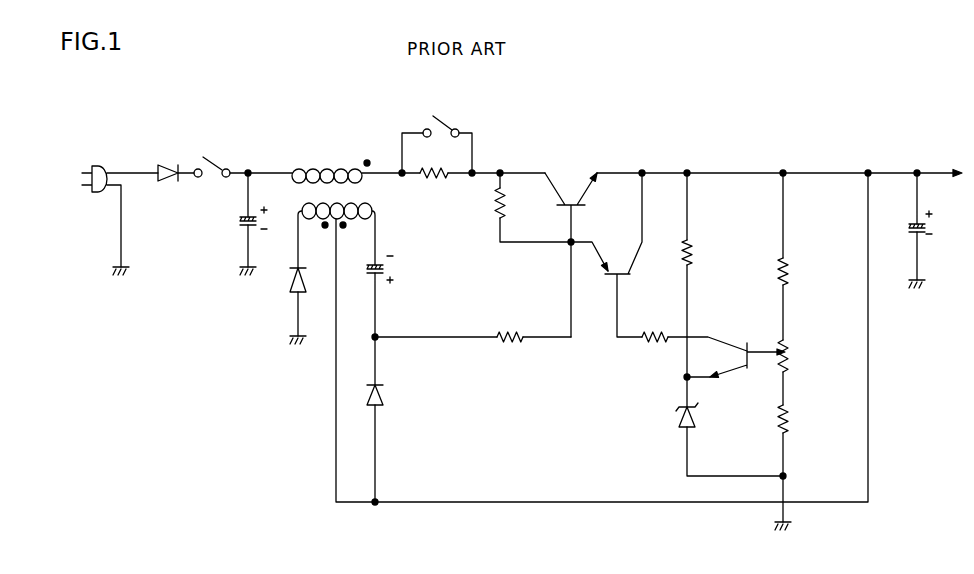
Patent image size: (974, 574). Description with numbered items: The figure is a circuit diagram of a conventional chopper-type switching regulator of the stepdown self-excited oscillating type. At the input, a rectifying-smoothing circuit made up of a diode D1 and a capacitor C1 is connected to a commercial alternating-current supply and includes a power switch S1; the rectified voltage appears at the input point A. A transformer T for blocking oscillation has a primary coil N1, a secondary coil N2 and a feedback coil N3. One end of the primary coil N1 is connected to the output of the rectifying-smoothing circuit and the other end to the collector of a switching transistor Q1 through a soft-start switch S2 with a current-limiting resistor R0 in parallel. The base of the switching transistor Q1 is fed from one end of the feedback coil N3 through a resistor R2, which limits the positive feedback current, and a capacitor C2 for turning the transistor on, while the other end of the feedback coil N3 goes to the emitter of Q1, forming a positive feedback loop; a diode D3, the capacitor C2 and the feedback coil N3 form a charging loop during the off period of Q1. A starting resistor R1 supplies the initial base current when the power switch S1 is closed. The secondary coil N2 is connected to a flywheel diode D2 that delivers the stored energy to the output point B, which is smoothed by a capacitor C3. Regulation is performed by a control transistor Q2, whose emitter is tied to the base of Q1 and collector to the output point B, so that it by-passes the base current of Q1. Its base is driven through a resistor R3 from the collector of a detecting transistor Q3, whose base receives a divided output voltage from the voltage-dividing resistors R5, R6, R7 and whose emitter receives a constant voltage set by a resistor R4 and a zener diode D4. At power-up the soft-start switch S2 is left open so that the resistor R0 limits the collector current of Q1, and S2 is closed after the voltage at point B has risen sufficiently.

The diode D1 is at (168, 186).
The power switch S1 is at (212, 156).
The input point A is at (249, 171).
The capacitor C1 is at (238, 225).
The transformer T is at (338, 206).
The primary coil N1 is at (331, 163).
The secondary coil N2 is at (314, 235).
The feedback coil N3 is at (369, 190).
The flywheel diode D2 is at (284, 306).
The capacitor C2 is at (369, 298).
The soft-start switch S2 is at (437, 138).
The current-limiting resistor R0 is at (434, 187).
The starting resistor R1 is at (532, 206).
The switching transistor Q1 is at (571, 243).
The control transistor Q2 is at (608, 253).
The resistor R2 is at (474, 323).
The resistor R3 is at (694, 329).
The resistor R4 is at (699, 273).
The detecting transistor Q3 is at (734, 361).
The zener diode D4 is at (718, 426).
The output point B is at (785, 171).
The voltage-dividing resistor R5 is at (796, 258).
The voltage-dividing resistor R6 is at (796, 372).
The voltage-dividing resistor R7 is at (795, 467).
The diode D3 is at (387, 421).
The capacitor C3 is at (932, 229).